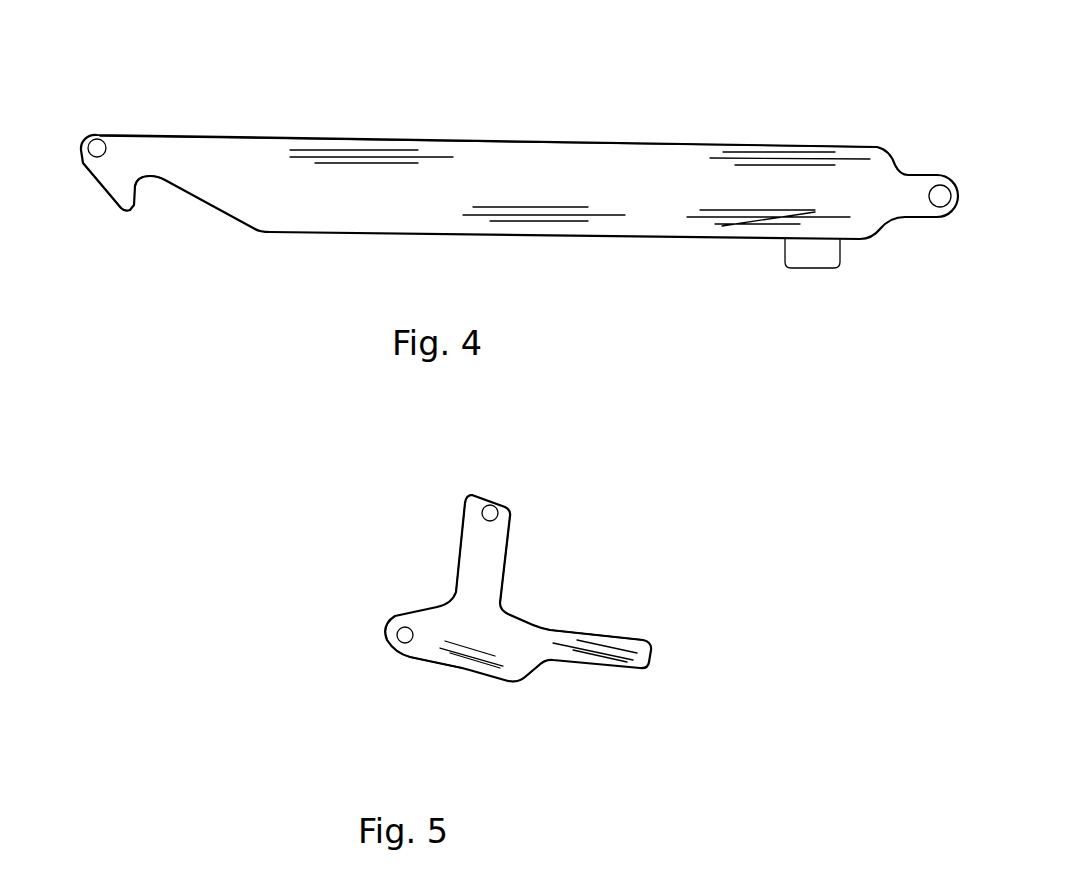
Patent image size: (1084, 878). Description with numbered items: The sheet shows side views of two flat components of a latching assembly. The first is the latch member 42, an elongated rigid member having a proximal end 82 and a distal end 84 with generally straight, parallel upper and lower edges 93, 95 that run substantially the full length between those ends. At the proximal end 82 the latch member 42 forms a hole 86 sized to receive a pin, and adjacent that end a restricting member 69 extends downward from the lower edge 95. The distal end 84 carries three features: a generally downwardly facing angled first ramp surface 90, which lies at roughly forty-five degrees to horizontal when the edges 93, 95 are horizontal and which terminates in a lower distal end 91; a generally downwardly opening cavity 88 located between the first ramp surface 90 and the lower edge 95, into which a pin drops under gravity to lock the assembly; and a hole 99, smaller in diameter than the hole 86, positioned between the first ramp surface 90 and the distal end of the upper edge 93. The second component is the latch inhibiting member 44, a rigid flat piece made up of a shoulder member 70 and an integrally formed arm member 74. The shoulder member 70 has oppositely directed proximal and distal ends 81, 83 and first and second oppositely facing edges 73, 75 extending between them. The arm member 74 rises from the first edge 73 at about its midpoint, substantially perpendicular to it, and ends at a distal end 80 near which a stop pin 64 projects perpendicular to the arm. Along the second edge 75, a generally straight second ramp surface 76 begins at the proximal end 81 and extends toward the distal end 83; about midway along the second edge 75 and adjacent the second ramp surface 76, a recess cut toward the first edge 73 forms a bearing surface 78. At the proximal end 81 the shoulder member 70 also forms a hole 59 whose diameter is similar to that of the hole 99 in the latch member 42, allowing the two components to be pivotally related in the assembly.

In FIG. 4, the latch member 42 is at (685, 100).
In FIG. 4, the hole 99 is at (97, 138).
In FIG. 4, the distal end 84 is at (160, 142).
In FIG. 4, the upper edge 93 is at (394, 126).
In FIG. 4, the lower edge 95 is at (724, 253).
In FIG. 4, the hole 86 is at (938, 175).
In FIG. 4, the proximal end 82 is at (908, 205).
In FIG. 4, the restricting member 69 is at (817, 268).
In FIG. 4, the first ramp surface 90 is at (80, 190).
In FIG. 4, the cavity 88 is at (162, 206).
In FIG. 4, the lower distal end 91 is at (125, 212).
In FIG. 5, the latch inhibiting member 44 is at (677, 575).
In FIG. 5, the stop pin 64 is at (500, 508).
In FIG. 5, the distal end 80 is at (472, 535).
In FIG. 5, the arm member 74 is at (480, 572).
In FIG. 5, the first edge 73 is at (535, 628).
In FIG. 5, the hole 59 is at (388, 625).
In FIG. 5, the proximal end 81 is at (355, 647).
In FIG. 5, the shoulder member 70 is at (410, 657).
In FIG. 5, the second ramp surface 76 is at (425, 698).
In FIG. 5, the second edge 75 is at (482, 673).
In FIG. 5, the bearing surface 78 is at (556, 695).
In FIG. 5, the distal end 83 is at (675, 663).